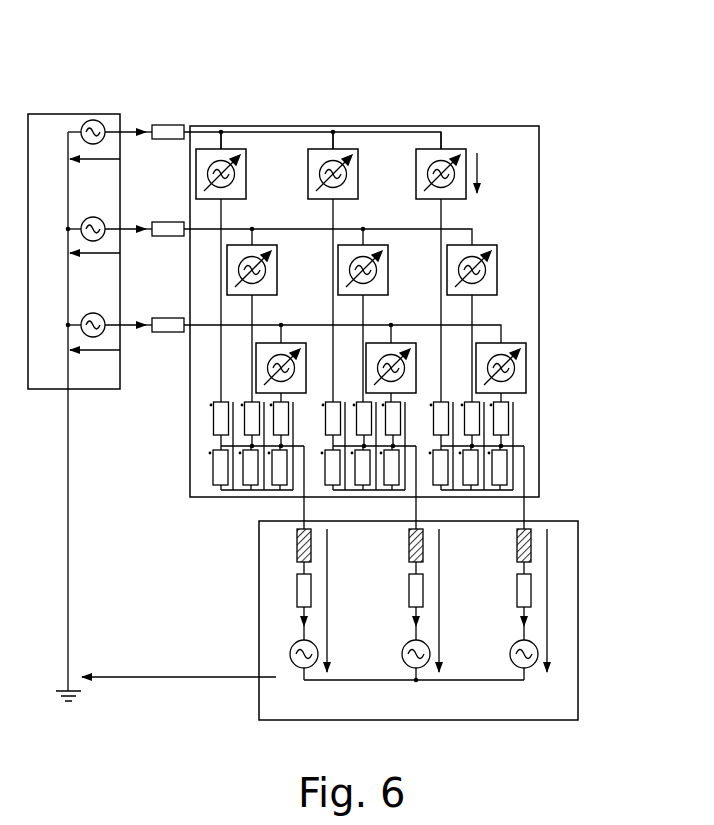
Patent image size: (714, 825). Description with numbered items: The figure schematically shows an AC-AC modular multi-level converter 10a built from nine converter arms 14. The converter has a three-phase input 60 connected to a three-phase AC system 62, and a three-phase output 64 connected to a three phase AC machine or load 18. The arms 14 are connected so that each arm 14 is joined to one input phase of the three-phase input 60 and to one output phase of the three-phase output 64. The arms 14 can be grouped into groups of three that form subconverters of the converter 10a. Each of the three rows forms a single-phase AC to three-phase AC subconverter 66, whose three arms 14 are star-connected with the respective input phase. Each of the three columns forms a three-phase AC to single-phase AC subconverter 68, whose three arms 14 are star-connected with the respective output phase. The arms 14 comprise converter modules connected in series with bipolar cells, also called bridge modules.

The three-phase input 60 is at (165, 73).
The three-phase AC system 62 is at (75, 114).
The three-phase AC to single-phase AC subconverter 68 is at (240, 73).
The converter arm 14 is at (240, 148).
The AC-AC modular multi-level converter 10a is at (540, 137).
The single-phase AC to three-phase AC subconverter 66 is at (622, 174).
The three-phase output 64 is at (580, 501).
The three phase AC machine or load 18 is at (580, 639).